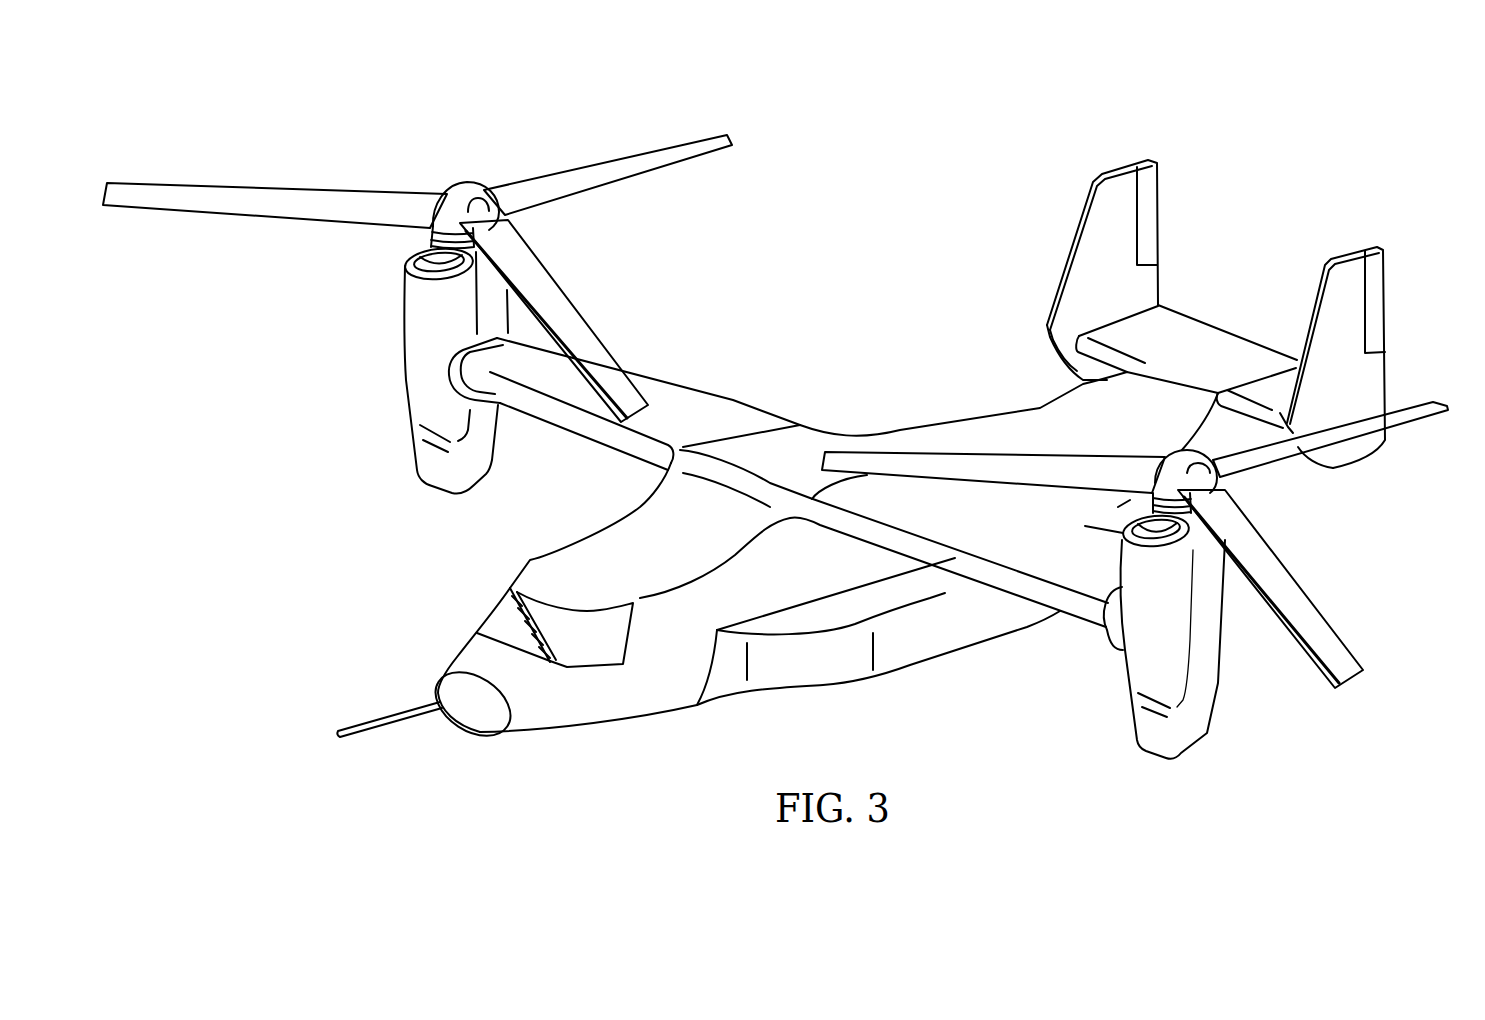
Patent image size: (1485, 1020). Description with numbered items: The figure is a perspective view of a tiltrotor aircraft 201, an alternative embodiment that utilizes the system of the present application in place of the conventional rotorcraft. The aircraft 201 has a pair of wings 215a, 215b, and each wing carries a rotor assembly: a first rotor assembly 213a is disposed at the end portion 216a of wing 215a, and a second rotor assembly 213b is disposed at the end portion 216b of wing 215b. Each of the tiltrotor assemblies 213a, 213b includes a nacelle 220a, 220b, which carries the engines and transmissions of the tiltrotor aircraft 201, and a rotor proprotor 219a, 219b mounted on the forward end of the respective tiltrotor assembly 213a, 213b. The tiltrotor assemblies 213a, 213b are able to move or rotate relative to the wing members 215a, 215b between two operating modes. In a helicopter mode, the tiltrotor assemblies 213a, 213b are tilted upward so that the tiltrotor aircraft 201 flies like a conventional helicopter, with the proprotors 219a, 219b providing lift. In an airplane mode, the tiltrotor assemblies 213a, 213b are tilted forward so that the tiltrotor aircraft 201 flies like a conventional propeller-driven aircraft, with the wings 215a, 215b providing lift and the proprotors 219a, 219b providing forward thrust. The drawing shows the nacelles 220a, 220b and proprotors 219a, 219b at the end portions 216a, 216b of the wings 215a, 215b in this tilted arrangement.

The tiltrotor aircraft 201 is at (390, 111).
The rotor assembly 213a is at (366, 280).
The rotor assembly 213b is at (1378, 592).
The wing 215a is at (692, 393).
The wing 215b is at (957, 573).
The end portion 216a is at (526, 311).
The end portion 216b is at (1108, 512).
The rotor proprotor 219a is at (580, 167).
The rotor proprotor 219b is at (1290, 568).
The nacelle 220a is at (404, 384).
The nacelle 220b is at (1217, 692).